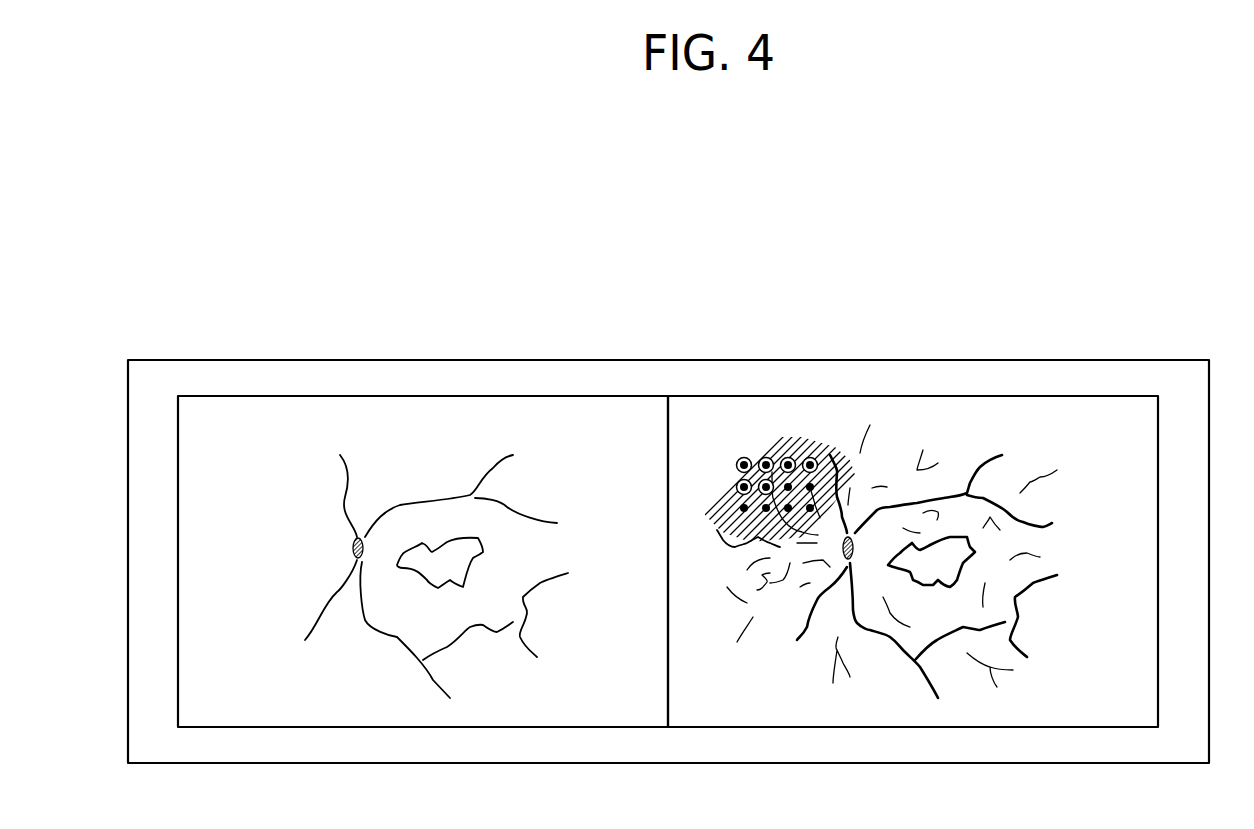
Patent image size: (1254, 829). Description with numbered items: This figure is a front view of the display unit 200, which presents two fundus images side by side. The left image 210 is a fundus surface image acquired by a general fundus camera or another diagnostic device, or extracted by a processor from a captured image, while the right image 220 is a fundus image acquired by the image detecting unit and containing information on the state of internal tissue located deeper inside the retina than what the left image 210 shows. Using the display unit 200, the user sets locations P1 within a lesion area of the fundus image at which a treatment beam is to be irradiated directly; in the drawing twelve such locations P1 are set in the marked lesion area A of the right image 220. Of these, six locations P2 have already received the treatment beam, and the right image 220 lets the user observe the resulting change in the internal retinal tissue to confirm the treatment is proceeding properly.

The display unit 200 is at (1168, 360).
The left image 210 is at (586, 396).
The right image 220 is at (1077, 396).
The region of interest (hatched area) A is at (718, 458).
The location P1 is at (786, 459).
The locations P2 is at (816, 487).